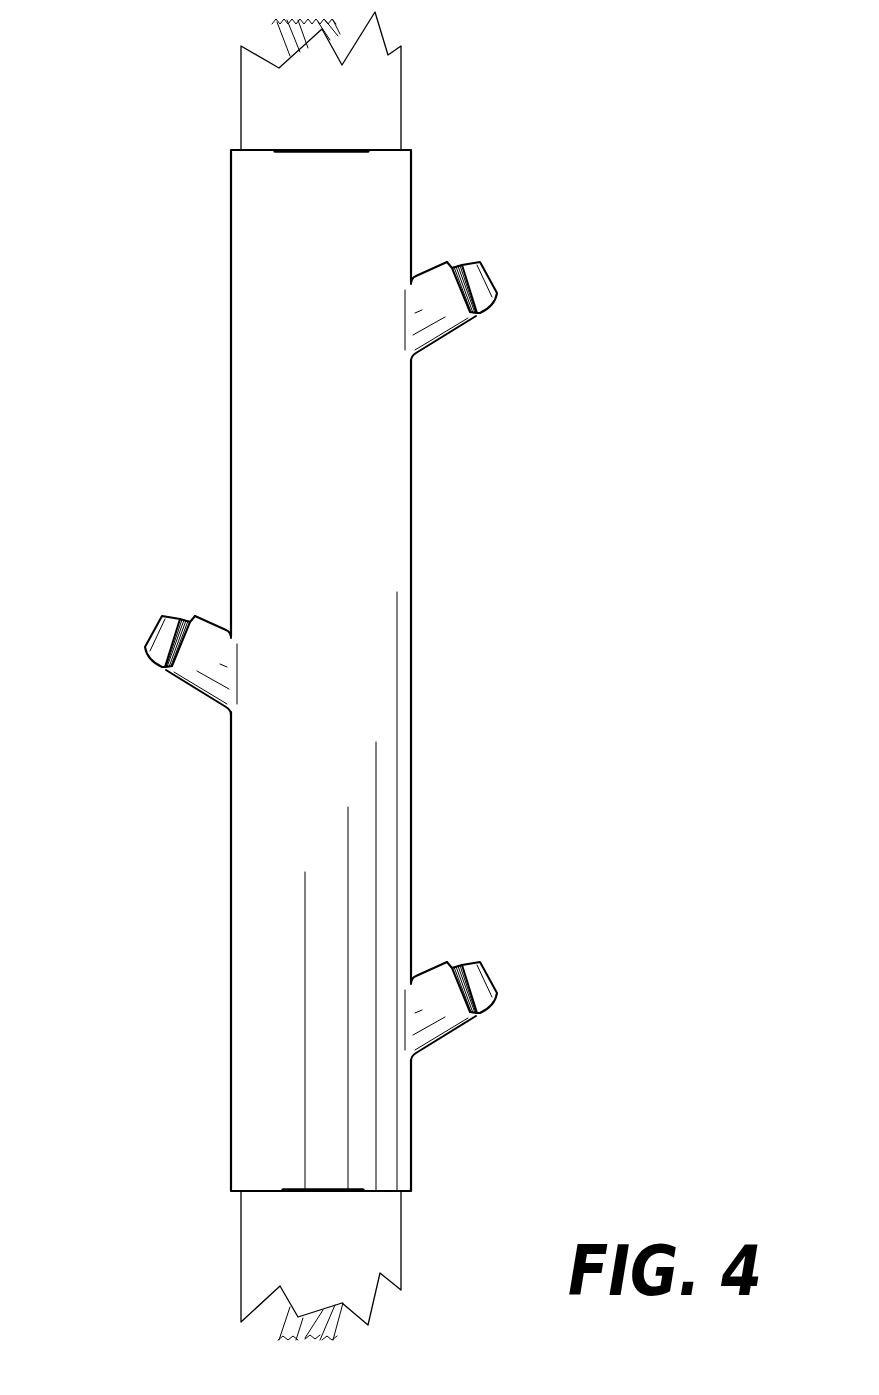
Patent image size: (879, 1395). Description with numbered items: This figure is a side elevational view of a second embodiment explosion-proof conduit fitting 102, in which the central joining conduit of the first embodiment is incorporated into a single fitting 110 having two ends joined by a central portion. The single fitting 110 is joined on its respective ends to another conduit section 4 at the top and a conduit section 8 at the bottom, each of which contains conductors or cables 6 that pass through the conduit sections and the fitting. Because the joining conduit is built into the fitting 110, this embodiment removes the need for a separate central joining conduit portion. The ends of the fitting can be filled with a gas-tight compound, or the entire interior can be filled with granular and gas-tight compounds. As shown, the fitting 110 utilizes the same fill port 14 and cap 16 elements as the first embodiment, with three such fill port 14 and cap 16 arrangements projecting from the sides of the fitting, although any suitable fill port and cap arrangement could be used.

The explosion-proof conduit fitting 102 is at (389, 637).
The single fitting 110 is at (260, 382).
The conduit section 4 is at (262, 138).
The conductors or cables 6 is at (335, 28).
The conduit section 8 is at (278, 1248).
The fill port 14 is at (445, 328).
The cap 16 is at (478, 283).